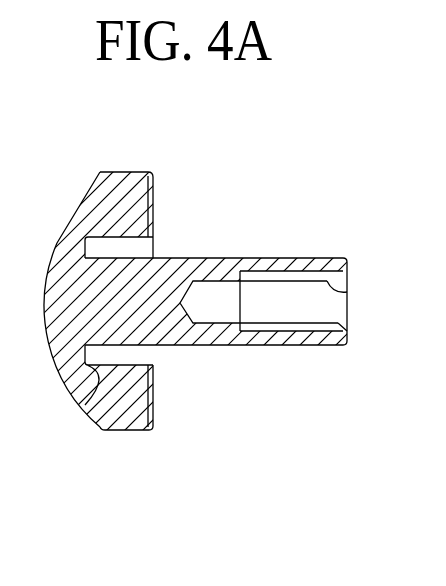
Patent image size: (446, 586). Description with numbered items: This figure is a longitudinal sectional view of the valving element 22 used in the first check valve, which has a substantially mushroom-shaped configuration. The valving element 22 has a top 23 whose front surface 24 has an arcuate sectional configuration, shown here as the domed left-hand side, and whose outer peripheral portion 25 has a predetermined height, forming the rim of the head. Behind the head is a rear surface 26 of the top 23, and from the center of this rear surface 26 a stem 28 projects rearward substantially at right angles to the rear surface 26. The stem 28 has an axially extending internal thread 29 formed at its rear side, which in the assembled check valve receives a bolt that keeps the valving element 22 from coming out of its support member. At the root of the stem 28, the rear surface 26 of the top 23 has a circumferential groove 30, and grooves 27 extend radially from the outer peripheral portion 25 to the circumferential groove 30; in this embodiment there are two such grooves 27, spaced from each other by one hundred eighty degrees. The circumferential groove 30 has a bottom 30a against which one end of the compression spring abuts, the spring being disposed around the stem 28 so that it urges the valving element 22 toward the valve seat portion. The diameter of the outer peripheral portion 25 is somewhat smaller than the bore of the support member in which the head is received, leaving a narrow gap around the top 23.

The valving element 22 is at (223, 308).
The top 23 is at (98, 198).
The front surface 24 is at (62, 233).
The outer peripheral portion 25 is at (130, 432).
The rear surface 26 is at (157, 212).
The grooves 27 is at (153, 185).
The stem 28 is at (228, 268).
The internal thread 29 is at (344, 290).
The circumferential groove 30 is at (142, 247).
The bottom of the circumferential groove 30a is at (88, 408).